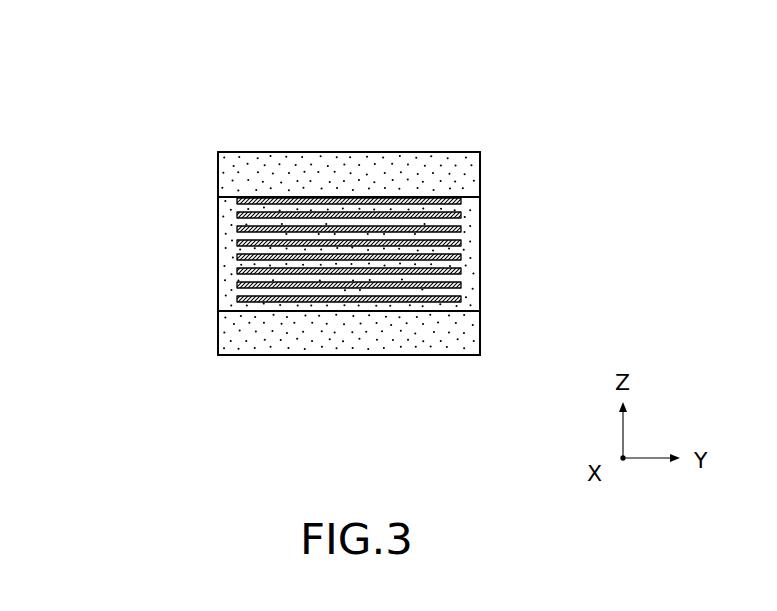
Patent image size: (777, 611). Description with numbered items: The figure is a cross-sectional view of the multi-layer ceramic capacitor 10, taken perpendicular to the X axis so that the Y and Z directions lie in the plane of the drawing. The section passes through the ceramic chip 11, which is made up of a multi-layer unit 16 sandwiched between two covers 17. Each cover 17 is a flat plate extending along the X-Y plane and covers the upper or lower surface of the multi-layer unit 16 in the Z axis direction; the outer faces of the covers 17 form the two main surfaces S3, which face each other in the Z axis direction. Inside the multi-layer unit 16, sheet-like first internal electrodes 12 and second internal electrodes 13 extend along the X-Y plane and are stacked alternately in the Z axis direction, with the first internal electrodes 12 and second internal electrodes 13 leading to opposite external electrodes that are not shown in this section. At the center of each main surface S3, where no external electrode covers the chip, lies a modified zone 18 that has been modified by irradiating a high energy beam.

The multi-layer ceramic capacitor 10 is at (106, 74).
The ceramic chip 11 is at (497, 150).
The first internal electrode 12 is at (239, 285).
The second internal electrode 13 is at (459, 299).
The multi-layer unit 16 is at (472, 207).
The cover 17 is at (360, 158).
The modified zone 18 is at (410, 151).
The main surface S3 is at (280, 141).